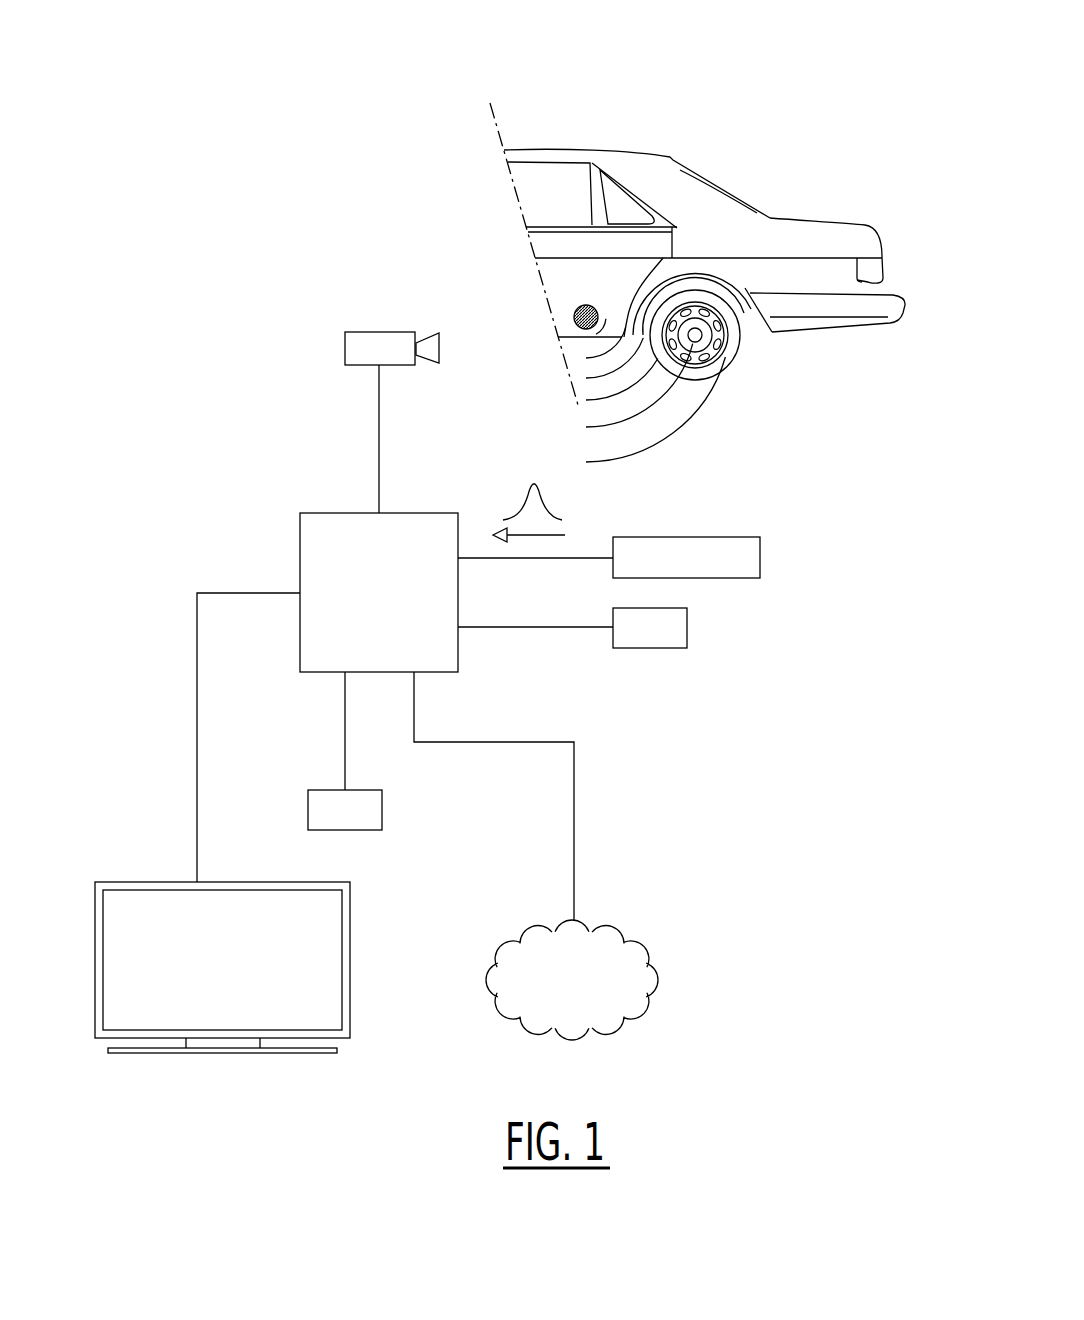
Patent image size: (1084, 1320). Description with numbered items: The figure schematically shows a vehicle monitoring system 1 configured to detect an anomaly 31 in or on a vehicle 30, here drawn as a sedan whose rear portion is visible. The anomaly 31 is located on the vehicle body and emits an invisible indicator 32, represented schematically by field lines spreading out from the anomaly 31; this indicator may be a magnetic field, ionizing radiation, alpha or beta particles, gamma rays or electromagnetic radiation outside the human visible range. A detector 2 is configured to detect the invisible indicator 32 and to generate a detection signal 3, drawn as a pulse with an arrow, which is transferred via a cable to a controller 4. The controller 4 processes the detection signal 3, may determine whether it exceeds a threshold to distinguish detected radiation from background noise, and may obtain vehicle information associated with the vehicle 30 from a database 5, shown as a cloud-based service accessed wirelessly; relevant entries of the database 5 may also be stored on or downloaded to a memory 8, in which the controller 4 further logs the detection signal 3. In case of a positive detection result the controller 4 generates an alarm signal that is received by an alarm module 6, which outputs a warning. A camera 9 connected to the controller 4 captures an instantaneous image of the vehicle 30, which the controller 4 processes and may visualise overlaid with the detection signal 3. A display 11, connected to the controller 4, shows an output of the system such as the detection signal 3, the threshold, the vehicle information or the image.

The vehicle monitoring system 1 is at (186, 322).
The detector 2 is at (752, 553).
The detection signal 3 is at (527, 498).
The controller 4 is at (343, 530).
The database 5 is at (633, 955).
The alarm module 6 is at (663, 628).
The memory 8 is at (363, 813).
The camera 9 is at (391, 345).
The display 11 is at (157, 907).
The vehicle 30 is at (780, 158).
The anomaly 31 is at (590, 305).
The invisible indicator 32 is at (673, 415).